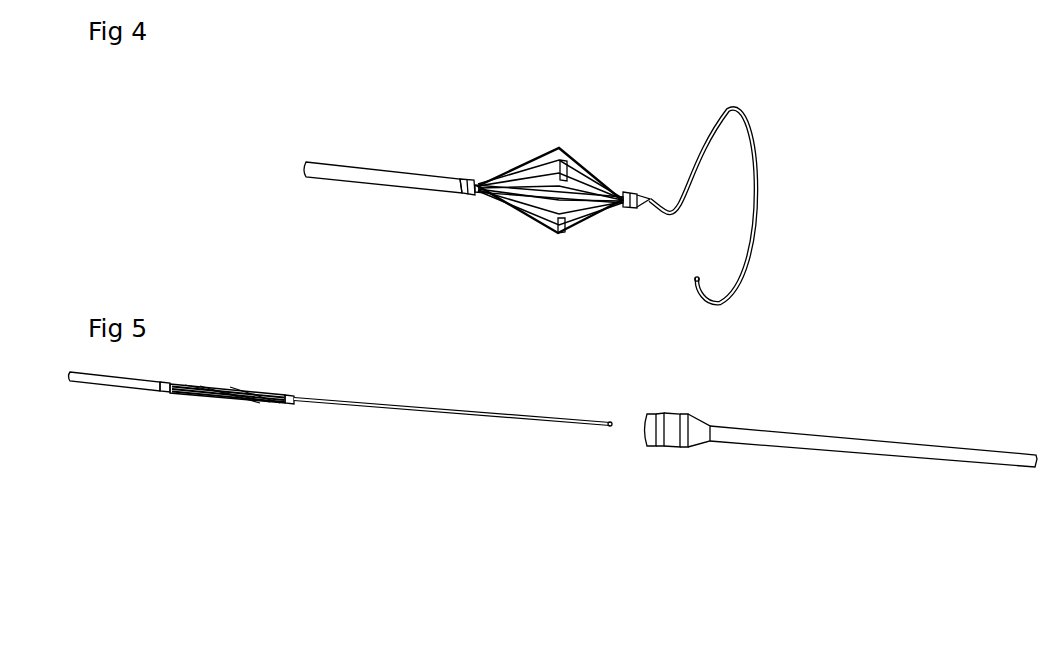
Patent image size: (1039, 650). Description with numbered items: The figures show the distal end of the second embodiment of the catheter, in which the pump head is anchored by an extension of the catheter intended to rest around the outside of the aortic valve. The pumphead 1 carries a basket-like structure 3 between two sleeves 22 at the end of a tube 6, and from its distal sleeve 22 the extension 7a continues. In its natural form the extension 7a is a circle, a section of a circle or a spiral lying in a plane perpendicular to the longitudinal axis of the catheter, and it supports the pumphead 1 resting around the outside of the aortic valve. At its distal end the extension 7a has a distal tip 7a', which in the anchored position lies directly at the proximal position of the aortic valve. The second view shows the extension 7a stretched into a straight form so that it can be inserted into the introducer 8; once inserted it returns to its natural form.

In FIG. 4, the pumphead 1 is at (564, 142).
In FIG. 5, the pumphead 1 is at (225, 408).
In FIG. 4, the basket struts 3 is at (573, 160).
In FIG. 4, the sheath tube 6 is at (379, 162).
In FIG. 5, the sheath tube 6 is at (108, 382).
In FIG. 4, the extension 7a is at (751, 176).
In FIG. 5, the extension 7a is at (453, 461).
In FIG. 4, the distal tip 7a' is at (647, 309).
In FIG. 5, the introducer 8 is at (802, 446).
In FIG. 4, the connecting sleeve 22 is at (465, 186).